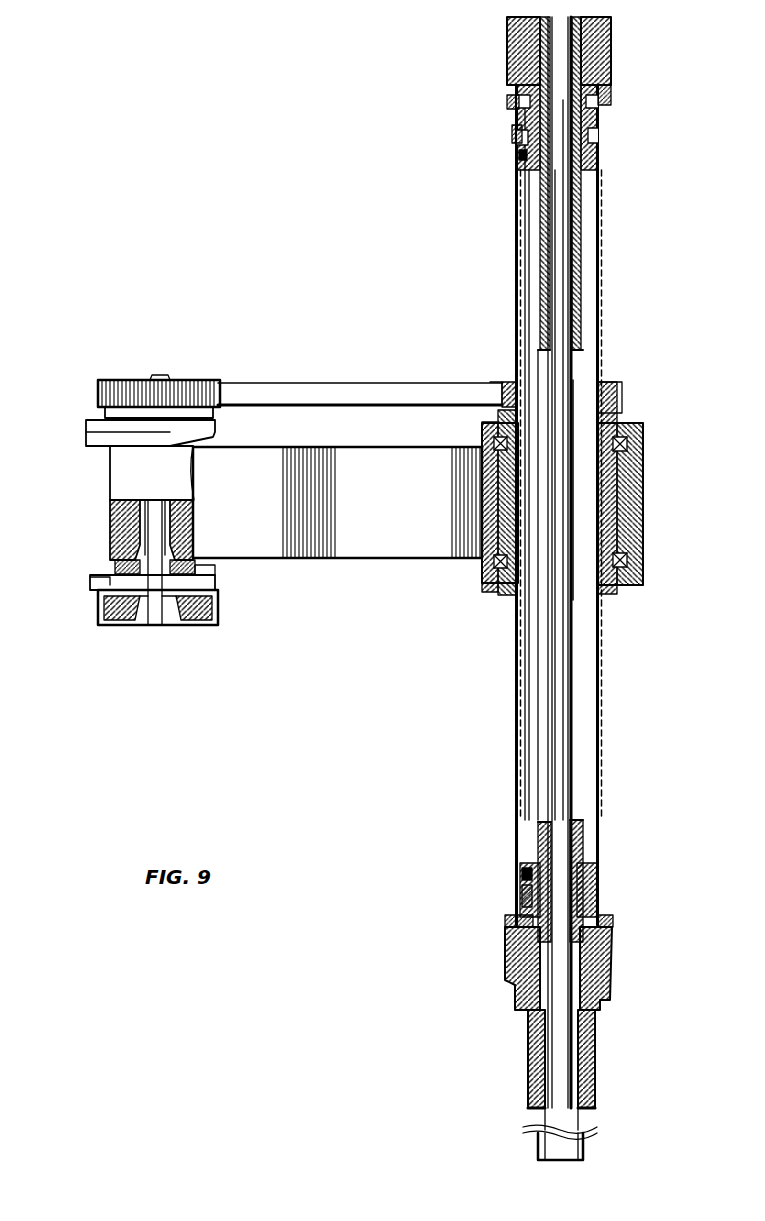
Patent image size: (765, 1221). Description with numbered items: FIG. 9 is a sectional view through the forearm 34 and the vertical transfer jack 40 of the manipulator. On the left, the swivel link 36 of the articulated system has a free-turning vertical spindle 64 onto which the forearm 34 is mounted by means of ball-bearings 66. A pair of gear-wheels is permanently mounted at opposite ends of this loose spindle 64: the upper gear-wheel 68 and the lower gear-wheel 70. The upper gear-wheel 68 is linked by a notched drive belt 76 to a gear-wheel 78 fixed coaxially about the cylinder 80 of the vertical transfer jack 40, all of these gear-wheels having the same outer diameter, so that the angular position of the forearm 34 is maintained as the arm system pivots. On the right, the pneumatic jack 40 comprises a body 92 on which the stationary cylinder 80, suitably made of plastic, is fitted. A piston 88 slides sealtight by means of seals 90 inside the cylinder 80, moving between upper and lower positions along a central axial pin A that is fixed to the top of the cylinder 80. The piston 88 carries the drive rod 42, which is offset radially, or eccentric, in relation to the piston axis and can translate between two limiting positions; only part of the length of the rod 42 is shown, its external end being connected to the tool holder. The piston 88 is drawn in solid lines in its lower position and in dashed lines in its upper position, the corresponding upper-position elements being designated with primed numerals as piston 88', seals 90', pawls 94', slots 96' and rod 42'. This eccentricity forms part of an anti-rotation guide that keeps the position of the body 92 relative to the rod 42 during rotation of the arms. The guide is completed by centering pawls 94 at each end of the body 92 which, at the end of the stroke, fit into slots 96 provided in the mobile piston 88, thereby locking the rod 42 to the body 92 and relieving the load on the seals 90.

The forearm 34 is at (323, 540).
The swivel link 36 is at (80, 493).
The vertical transfer jack 40 is at (604, 738).
The drive rod 42 is at (591, 1085).
The upper shaft 42' is at (586, 562).
The free-turning spindle 64 is at (157, 528).
The ball-bearings 66 is at (192, 578).
The upper gear-wheel 68 is at (128, 380).
The lower gear-wheel 70 is at (98, 612).
The drive belt 76 is at (278, 396).
The gear-wheel 78 is at (502, 390).
The cylinder 80 is at (598, 358).
The piston 88 is at (580, 881).
The upper bearing housing 88' is at (624, 110).
The seals 90 is at (486, 888).
The upper bearing 90' is at (494, 135).
The body 92 is at (598, 954).
The centering pawls 94 is at (539, 915).
The upper retaining plate 94' is at (492, 103).
The slots 96 is at (505, 873).
The upper seal 96' is at (506, 160).
The central axial pin A is at (573, 386).